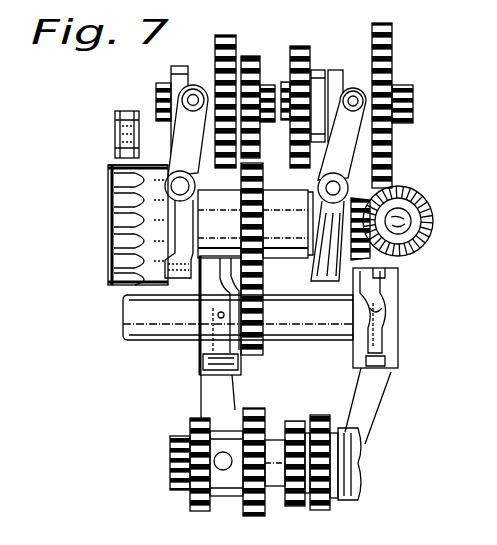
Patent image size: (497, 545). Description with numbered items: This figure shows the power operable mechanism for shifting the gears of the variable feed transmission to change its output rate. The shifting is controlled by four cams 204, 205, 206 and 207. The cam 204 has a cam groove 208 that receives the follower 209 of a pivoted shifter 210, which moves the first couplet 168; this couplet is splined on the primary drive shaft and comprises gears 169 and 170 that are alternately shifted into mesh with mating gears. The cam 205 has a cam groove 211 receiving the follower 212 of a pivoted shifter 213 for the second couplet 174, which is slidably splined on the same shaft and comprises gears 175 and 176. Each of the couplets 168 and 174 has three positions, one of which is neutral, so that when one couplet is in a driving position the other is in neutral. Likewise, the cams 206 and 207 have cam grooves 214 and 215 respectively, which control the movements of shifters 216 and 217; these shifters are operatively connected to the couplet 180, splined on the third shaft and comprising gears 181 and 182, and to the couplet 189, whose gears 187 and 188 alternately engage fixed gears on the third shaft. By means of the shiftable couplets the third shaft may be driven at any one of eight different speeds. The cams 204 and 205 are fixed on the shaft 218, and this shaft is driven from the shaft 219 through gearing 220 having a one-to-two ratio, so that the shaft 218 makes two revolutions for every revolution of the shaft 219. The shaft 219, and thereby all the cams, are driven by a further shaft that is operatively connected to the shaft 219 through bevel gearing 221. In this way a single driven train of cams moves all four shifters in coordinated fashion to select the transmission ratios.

The first couplet 168 is at (228, 492).
The gear 169 is at (170, 487).
The gear 170 is at (241, 508).
The second couplet 174 is at (332, 492).
The gear 175 is at (287, 498).
The gear 176 is at (312, 502).
The couplet 180 is at (164, 65).
The gear 181 is at (217, 32).
The gear 182 is at (244, 48).
The gear 187 is at (300, 40).
The gear 188 is at (385, 48).
The couplet 189 is at (308, 62).
The cam 204 is at (205, 330).
The cam 205 is at (385, 282).
The cam 206 is at (104, 191).
The cam 207 is at (297, 200).
The cam groove 208 is at (210, 342).
The follower 209 is at (210, 313).
The pivoted shifter 210 is at (193, 392).
The cam groove 211 is at (392, 292).
The follower 212 is at (392, 318).
The pivoted shifter 213 is at (362, 398).
The cam groove 214 is at (105, 240).
The cam groove 215 is at (318, 232).
The shifter 216 is at (170, 126).
The shifter 217 is at (372, 142).
The shaft 218 is at (297, 318).
The shaft 219 is at (215, 205).
The gearing 220 is at (403, 210).
The bevel gearing 221 is at (396, 186).